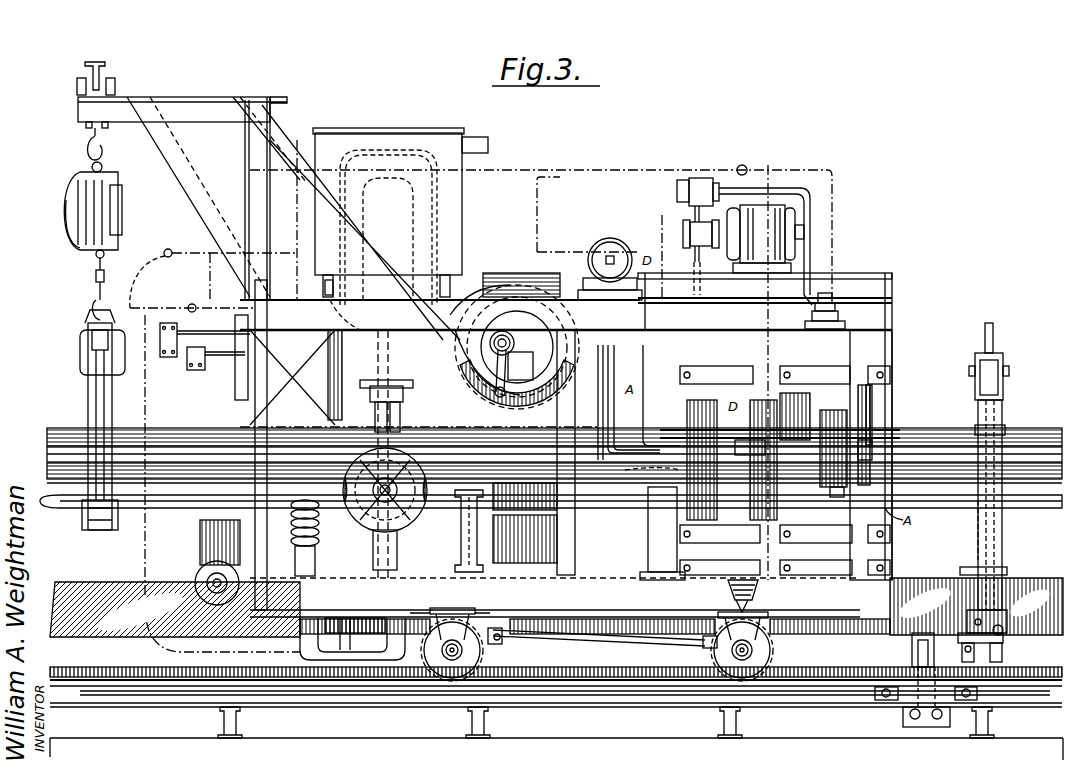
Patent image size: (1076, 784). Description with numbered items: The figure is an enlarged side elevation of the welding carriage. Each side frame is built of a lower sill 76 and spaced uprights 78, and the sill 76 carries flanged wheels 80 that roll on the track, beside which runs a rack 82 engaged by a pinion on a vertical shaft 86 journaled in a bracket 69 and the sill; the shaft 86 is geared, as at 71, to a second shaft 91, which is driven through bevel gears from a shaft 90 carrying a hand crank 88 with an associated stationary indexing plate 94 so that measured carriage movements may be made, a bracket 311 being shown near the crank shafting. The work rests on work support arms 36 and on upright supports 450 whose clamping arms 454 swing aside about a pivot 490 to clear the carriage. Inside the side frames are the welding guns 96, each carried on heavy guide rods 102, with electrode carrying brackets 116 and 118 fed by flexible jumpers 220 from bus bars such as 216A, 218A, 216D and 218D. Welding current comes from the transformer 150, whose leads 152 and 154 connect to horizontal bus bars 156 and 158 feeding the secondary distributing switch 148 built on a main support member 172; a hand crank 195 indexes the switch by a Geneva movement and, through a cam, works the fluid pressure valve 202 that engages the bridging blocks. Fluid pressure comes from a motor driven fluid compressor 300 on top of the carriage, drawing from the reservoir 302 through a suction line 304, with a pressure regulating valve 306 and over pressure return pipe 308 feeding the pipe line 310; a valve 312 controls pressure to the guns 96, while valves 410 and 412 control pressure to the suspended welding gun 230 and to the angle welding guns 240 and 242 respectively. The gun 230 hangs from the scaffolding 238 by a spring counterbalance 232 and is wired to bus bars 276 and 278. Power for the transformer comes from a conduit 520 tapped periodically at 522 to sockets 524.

The scaffolding 238 is at (176, 95).
The spring counterbalance 232 is at (62, 203).
The welding gun 230 is at (100, 395).
The valve 410 is at (168, 249).
The valve 412 is at (192, 304).
The bus bar 276 is at (226, 331).
The bus bar 278 is at (198, 347).
The upright 78 is at (255, 407).
The electrode carrying bracket 116 is at (554, 437).
The electrode carrying bracket 118 is at (554, 473).
The transformer 150 is at (452, 220).
The transformer lead 152 is at (340, 296).
The transformer lead 154 is at (410, 300).
The horizontal bus bar 156 is at (385, 324).
The horizontal bus bar 158 is at (455, 300).
The secondary distributing switch 148 is at (520, 305).
The main support member 172 is at (480, 343).
The hand crank 195 is at (475, 413).
The fluid pressure valve 202 is at (566, 272).
The pipe line 310 is at (696, 180).
The pressure regulating valve 306 is at (706, 186).
The valve 312 is at (746, 166).
The suction line 304 is at (705, 258).
The over pressure return pipe 308 is at (802, 190).
The motor driven fluid compressor 300 is at (752, 215).
The reservoir 302 is at (752, 318).
The guide rod 102 is at (715, 397).
The bus bar 216D is at (680, 376).
The bus bar 218A is at (620, 399).
The bus bar 216A is at (630, 405).
The bus bar 218D is at (650, 478).
The bracket 311 is at (368, 395).
The hand crank 88 is at (400, 525).
The shaft 90 is at (398, 500).
The stationary indexing plate 94 is at (392, 495).
The second shaft 91 is at (398, 550).
The work support arm 36 is at (466, 552).
The angle welding gun 240 is at (305, 552).
The angle welding gun 242 is at (213, 577).
The conduit 520 is at (97, 588).
The vertical shaft 86 is at (305, 645).
The flanged wheel 80 is at (438, 662).
The clamping arm 454 is at (612, 643).
The lower sill 76 is at (422, 657).
The bracket 69 is at (313, 657).
The gearing 71 is at (370, 630).
The rack 82 is at (587, 678).
The tap 522 is at (912, 652).
The socket 524 is at (930, 727).
The pivot 490 is at (1005, 643).
The upright support 450 is at (978, 530).
The flexible jumper 220 is at (875, 398).
The welding gun 96 is at (875, 416).